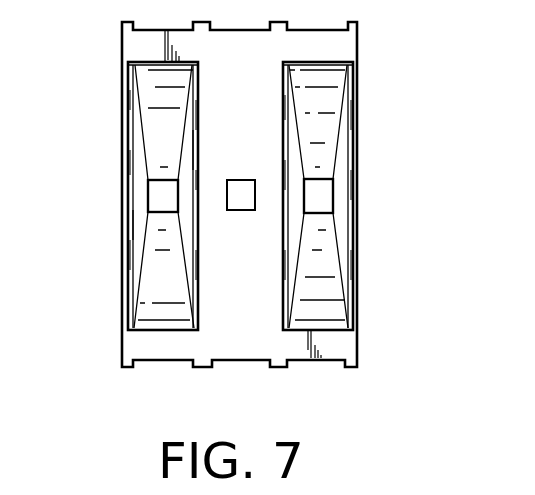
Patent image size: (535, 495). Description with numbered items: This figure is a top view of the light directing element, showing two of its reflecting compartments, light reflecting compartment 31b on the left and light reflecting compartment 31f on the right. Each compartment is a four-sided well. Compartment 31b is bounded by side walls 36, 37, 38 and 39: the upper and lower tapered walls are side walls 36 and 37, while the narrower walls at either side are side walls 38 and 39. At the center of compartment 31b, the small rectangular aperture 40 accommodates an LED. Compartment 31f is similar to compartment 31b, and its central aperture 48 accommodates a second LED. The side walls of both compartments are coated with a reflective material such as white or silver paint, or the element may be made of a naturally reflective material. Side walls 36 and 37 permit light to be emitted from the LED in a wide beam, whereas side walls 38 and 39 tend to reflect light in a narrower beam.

The light reflecting compartment 31b is at (154, 179).
The light reflecting compartment 31f is at (364, 196).
The side wall 36 is at (180, 141).
The side wall 37 is at (178, 277).
The side wall 38 is at (140, 221).
The side wall 39 is at (187, 153).
The aperture 40 is at (157, 192).
The aperture 48 is at (316, 194).